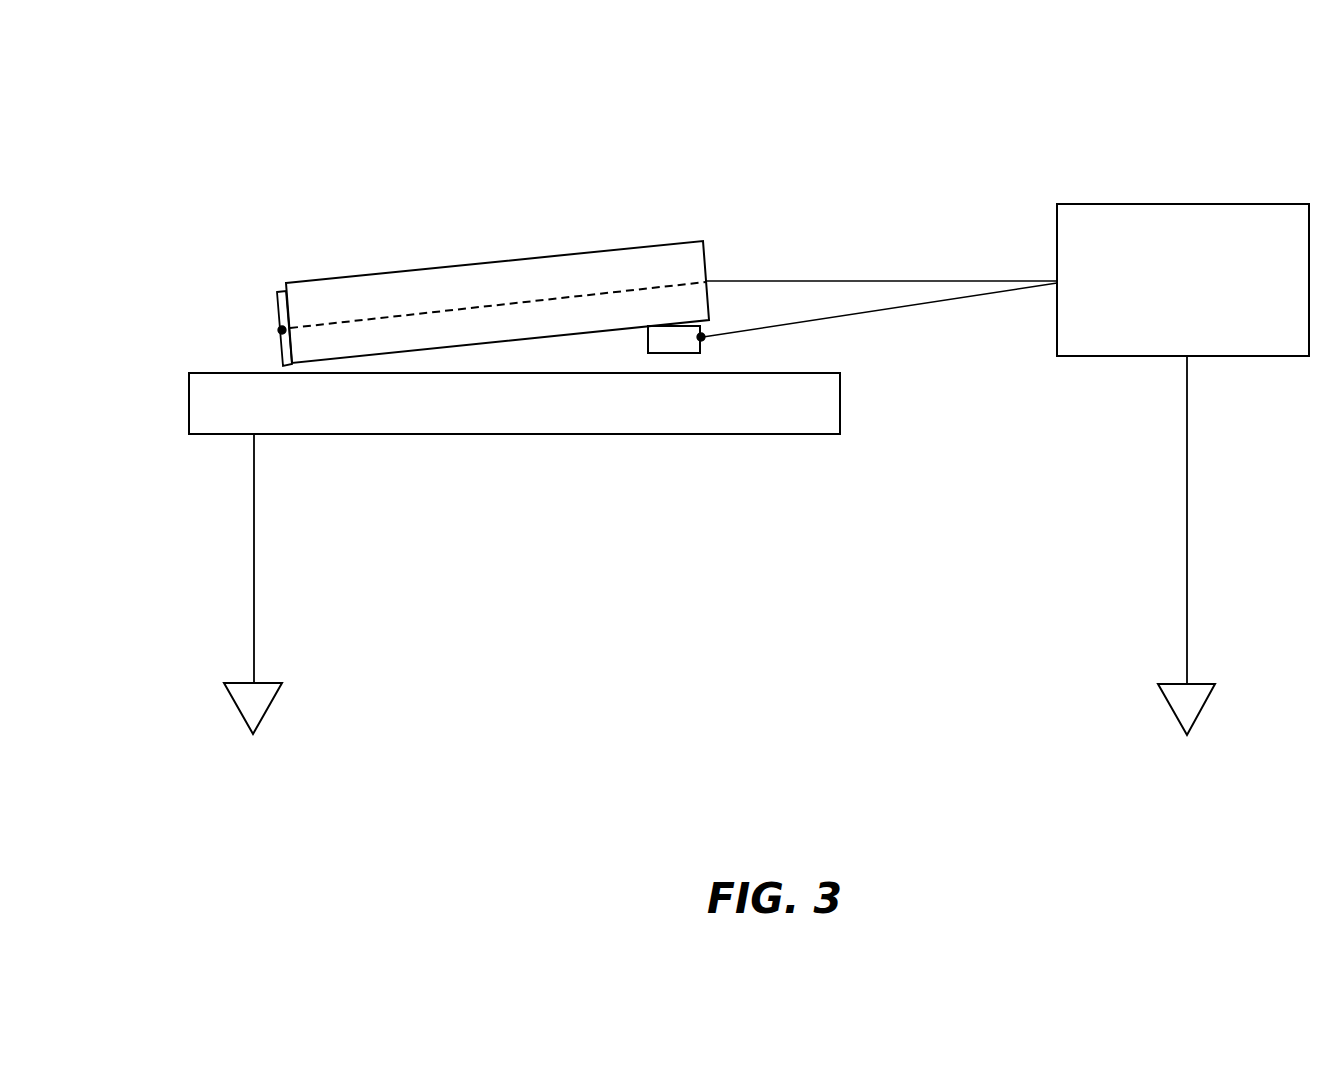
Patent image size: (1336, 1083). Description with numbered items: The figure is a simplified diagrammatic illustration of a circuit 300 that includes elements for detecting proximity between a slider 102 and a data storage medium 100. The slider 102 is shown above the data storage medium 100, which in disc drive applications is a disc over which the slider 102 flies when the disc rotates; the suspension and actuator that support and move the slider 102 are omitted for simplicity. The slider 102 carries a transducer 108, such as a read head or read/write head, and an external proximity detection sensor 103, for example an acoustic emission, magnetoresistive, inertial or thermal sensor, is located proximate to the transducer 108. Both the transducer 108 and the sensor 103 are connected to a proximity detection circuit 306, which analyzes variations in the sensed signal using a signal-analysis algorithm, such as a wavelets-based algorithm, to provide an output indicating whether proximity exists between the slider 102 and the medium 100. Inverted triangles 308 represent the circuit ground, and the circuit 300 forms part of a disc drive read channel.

The circuit 300 is at (828, 142).
The data storage medium 100 is at (748, 422).
The slider 102 is at (345, 288).
The external proximity detection sensor 103 is at (675, 335).
The transducer 108 is at (275, 303).
The proximity detection circuit 306 is at (1210, 338).
The circuit ground 308 is at (263, 697).